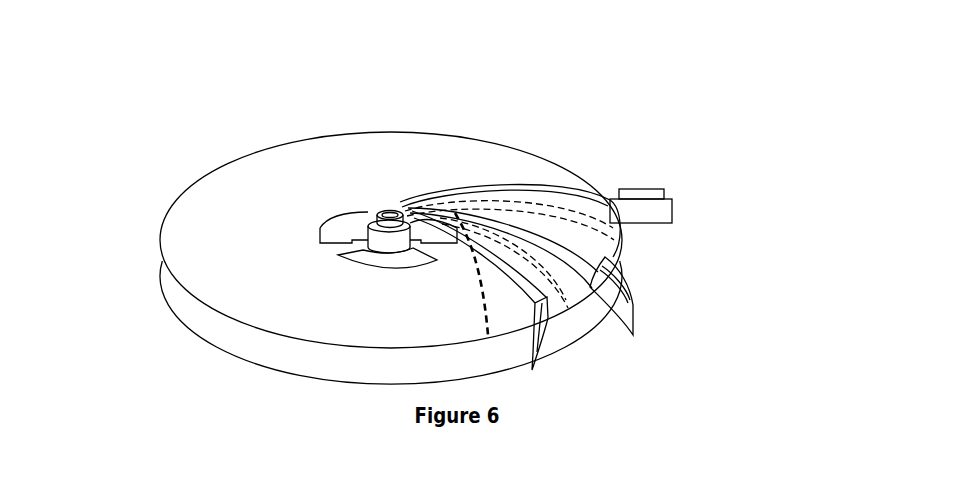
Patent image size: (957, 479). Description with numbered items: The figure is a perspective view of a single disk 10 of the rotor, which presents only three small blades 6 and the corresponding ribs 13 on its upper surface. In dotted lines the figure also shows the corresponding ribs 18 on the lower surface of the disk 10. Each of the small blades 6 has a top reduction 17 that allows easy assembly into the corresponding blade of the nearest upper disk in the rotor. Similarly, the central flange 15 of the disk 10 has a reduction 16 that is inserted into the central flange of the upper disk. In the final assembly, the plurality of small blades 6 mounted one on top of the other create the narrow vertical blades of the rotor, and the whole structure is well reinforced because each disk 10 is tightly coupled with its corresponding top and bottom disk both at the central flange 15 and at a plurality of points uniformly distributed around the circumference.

The disk 10 is at (352, 298).
The central flange 15 is at (388, 238).
The reduction 16 is at (390, 220).
The ribs 13 is at (523, 262).
The ribs 18 is at (485, 235).
The top reduction 17 is at (620, 277).
The small blades 6 is at (535, 353).